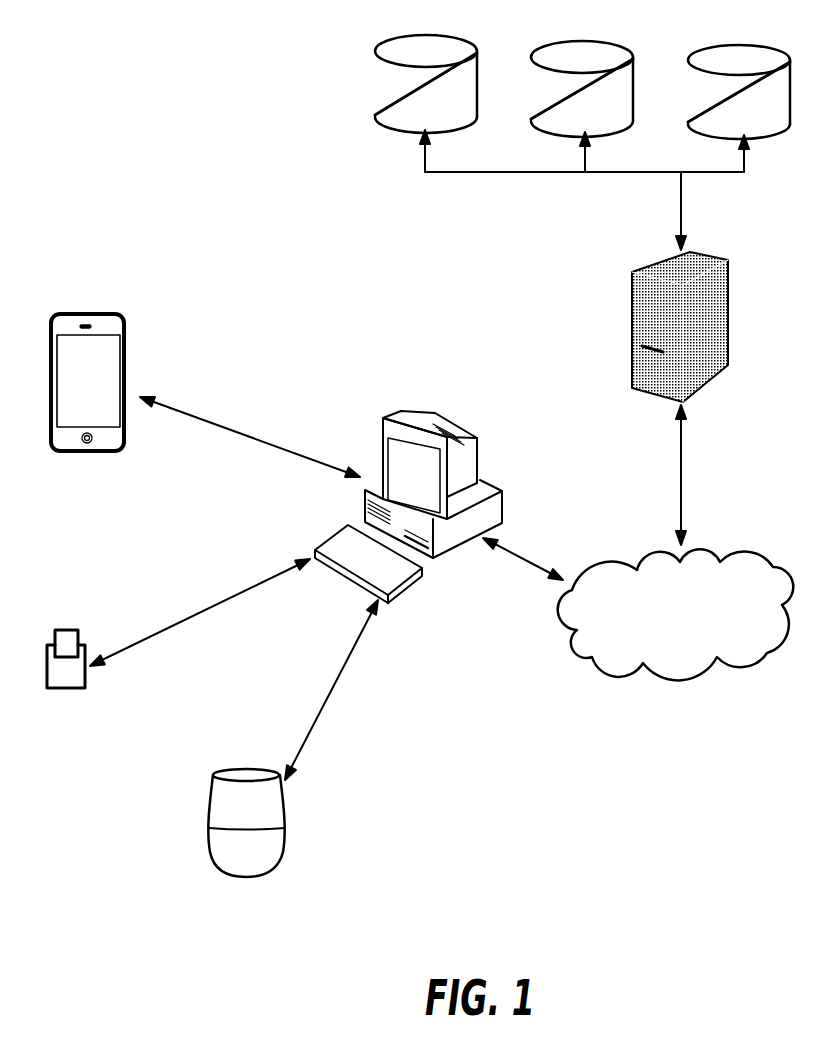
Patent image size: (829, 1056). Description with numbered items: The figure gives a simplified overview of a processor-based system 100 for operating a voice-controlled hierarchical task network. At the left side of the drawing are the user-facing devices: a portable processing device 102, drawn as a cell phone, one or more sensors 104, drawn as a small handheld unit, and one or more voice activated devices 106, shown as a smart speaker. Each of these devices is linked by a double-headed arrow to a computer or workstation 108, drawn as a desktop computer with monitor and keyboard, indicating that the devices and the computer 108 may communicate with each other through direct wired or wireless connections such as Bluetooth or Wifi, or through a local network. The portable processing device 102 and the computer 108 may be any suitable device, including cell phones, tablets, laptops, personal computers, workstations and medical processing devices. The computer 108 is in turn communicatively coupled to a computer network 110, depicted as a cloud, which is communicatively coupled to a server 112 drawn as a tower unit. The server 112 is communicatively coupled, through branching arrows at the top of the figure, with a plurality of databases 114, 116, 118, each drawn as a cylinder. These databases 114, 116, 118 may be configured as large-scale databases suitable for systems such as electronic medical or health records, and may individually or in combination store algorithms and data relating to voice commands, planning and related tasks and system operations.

The system 100 is at (190, 166).
The portable processing device 102 is at (90, 313).
The sensor 104 is at (50, 646).
The voice activated device 106 is at (222, 775).
The computer 108 is at (384, 418).
The computer network 110 is at (676, 614).
The server 112 is at (631, 335).
The database 114 is at (373, 93).
The database 116 is at (532, 54).
The database 118 is at (689, 61).